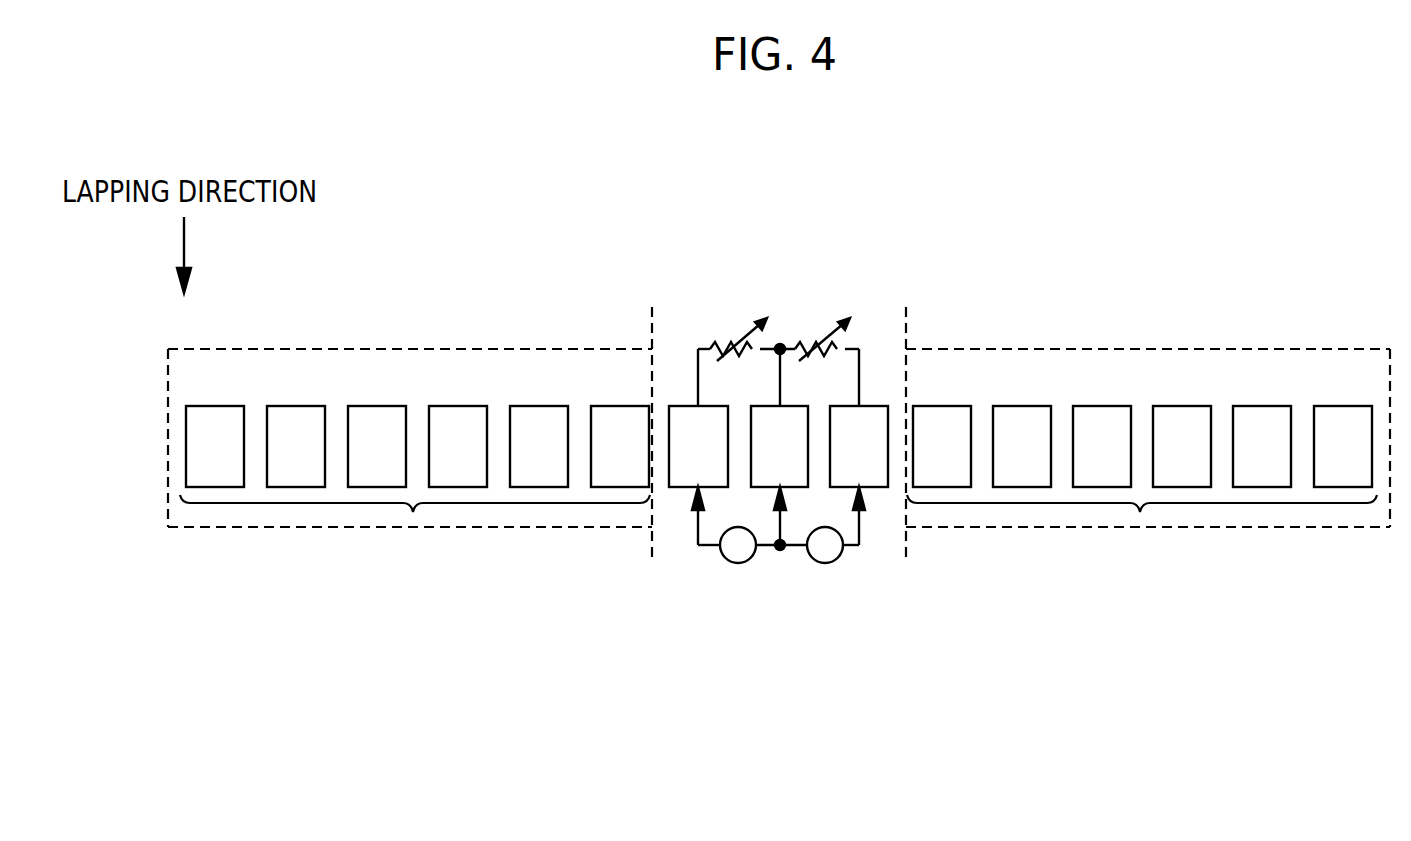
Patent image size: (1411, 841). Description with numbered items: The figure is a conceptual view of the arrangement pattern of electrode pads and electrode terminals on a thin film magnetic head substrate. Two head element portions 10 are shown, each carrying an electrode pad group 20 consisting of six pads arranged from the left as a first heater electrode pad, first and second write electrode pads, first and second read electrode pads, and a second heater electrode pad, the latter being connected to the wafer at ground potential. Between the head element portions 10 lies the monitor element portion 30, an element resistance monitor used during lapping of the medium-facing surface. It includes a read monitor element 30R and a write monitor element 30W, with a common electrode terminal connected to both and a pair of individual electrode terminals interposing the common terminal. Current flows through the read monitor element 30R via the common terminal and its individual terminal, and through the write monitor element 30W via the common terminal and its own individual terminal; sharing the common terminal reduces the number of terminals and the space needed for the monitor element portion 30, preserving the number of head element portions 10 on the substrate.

The head element portion 10 is at (465, 349).
The electrode pad group 20 is at (413, 512).
The monitor element portion 30 is at (778, 367).
The read monitor element 30R is at (730, 340).
The write monitor element 30W is at (812, 340).